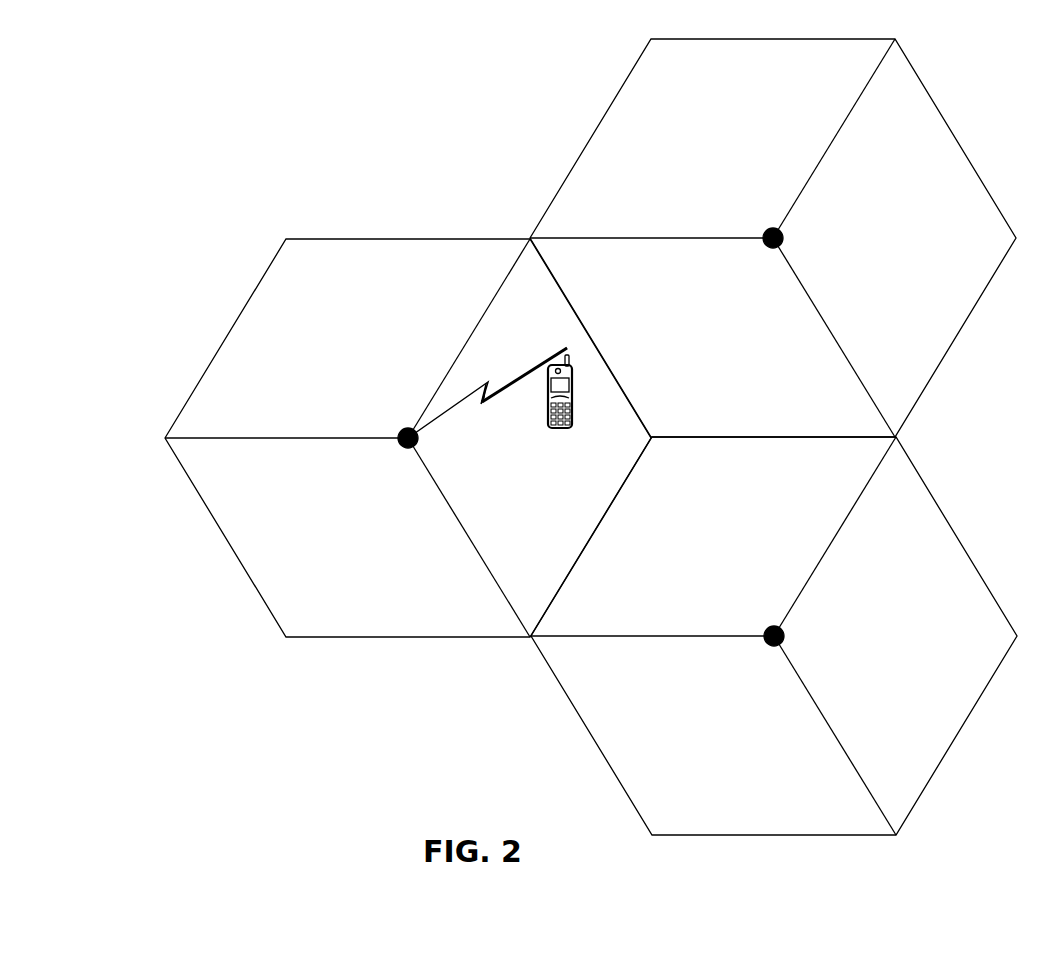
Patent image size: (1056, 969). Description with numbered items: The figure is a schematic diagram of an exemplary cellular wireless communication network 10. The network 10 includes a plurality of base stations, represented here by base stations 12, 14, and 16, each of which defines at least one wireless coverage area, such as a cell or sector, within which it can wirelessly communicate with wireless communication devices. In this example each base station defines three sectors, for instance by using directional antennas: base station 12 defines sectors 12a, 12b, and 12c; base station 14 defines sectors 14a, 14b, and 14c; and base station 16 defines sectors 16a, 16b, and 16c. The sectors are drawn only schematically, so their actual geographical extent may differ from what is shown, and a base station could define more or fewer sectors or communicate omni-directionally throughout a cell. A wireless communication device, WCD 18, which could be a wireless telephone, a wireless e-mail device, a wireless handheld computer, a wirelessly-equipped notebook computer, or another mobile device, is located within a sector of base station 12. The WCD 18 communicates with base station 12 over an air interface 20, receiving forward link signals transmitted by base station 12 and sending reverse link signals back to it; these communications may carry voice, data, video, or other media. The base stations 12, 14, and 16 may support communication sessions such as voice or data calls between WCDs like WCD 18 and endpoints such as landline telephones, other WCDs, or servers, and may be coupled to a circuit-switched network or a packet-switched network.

The cellular wireless communication network 10 is at (282, 741).
The base station 12 is at (405, 428).
The sector 12a is at (334, 325).
The sector 12b is at (539, 487).
The sector 12c is at (346, 535).
The base station 14 is at (770, 228).
The sector 14a is at (689, 130).
The sector 14b is at (896, 225).
The sector 14c is at (715, 347).
The base station 16 is at (771, 626).
The sector 16a is at (716, 525).
The sector 16b is at (909, 625).
The sector 16c is at (704, 735).
The wireless communication device (WCD) 18 is at (573, 393).
The air interface 20 is at (490, 370).